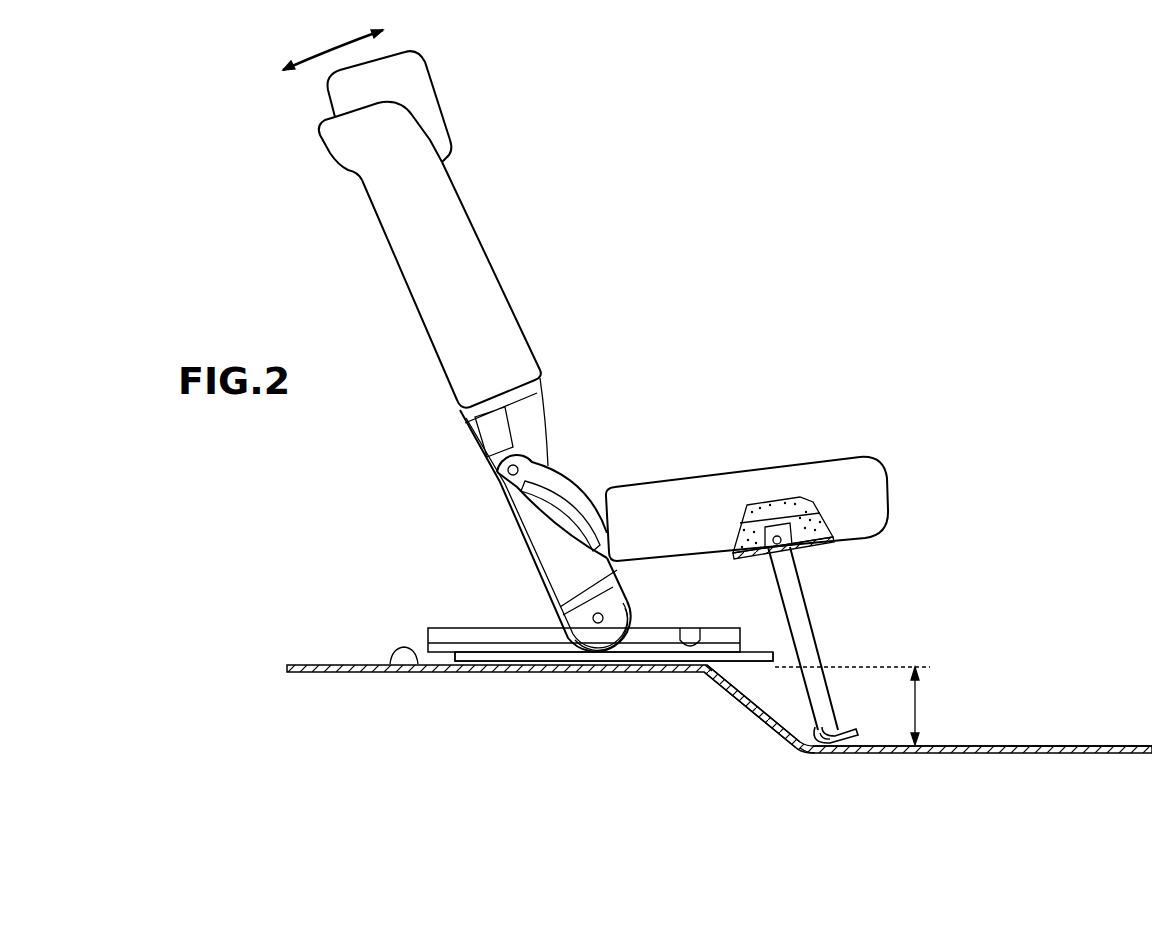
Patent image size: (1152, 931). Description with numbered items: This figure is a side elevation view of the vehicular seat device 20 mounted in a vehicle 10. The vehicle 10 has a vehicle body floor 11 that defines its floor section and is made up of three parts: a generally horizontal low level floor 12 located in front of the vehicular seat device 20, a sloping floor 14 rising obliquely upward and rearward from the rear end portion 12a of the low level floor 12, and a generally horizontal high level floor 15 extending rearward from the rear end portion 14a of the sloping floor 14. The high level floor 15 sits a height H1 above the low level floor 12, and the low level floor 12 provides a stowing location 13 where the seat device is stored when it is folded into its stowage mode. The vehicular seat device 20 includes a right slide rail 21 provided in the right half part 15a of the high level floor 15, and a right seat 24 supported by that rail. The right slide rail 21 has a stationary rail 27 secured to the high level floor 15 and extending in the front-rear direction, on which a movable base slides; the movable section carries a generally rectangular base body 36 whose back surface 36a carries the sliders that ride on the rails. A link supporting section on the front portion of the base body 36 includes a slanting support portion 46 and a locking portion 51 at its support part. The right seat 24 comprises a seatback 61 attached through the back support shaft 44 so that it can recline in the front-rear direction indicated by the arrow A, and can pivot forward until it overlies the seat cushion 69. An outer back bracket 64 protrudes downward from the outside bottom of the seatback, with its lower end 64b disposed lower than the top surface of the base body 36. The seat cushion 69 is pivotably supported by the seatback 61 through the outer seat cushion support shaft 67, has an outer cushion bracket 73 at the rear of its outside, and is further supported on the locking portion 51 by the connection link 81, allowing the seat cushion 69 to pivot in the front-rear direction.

The vehicle 10 is at (867, 133).
The vehicular seat device 20 is at (677, 186).
The right seat 24 is at (490, 247).
The seatback 61 is at (505, 335).
The seat cushion 69 is at (813, 473).
The connection link 81 is at (805, 598).
The outer seat cushion support shaft 67 is at (500, 472).
The outer cushion bracket 73 is at (560, 507).
The base body 36 is at (663, 623).
The back surface 36a is at (690, 642).
The right slide rail 21 is at (452, 628).
The outer back bracket 64 is at (540, 548).
The lower end of the outer back bracket 64b is at (600, 643).
The back support shaft 44 is at (592, 621).
The right half part of the high level floor 15a is at (508, 662).
The stationary rail 27 is at (650, 658).
The slanting support portion 46 is at (783, 705).
The locking portion 51 is at (853, 715).
The rear end portion of the sloping floor 14a is at (713, 670).
The sloping floor 14 is at (770, 722).
The rear end portion of the low level floor 12a is at (812, 758).
The low level floor 12 is at (958, 748).
The stowing location 13 is at (1062, 746).
The high level floor 15 is at (418, 673).
The vehicle body floor 11 is at (985, 808).
The height H1 is at (920, 705).
The arrow A is at (323, 45).